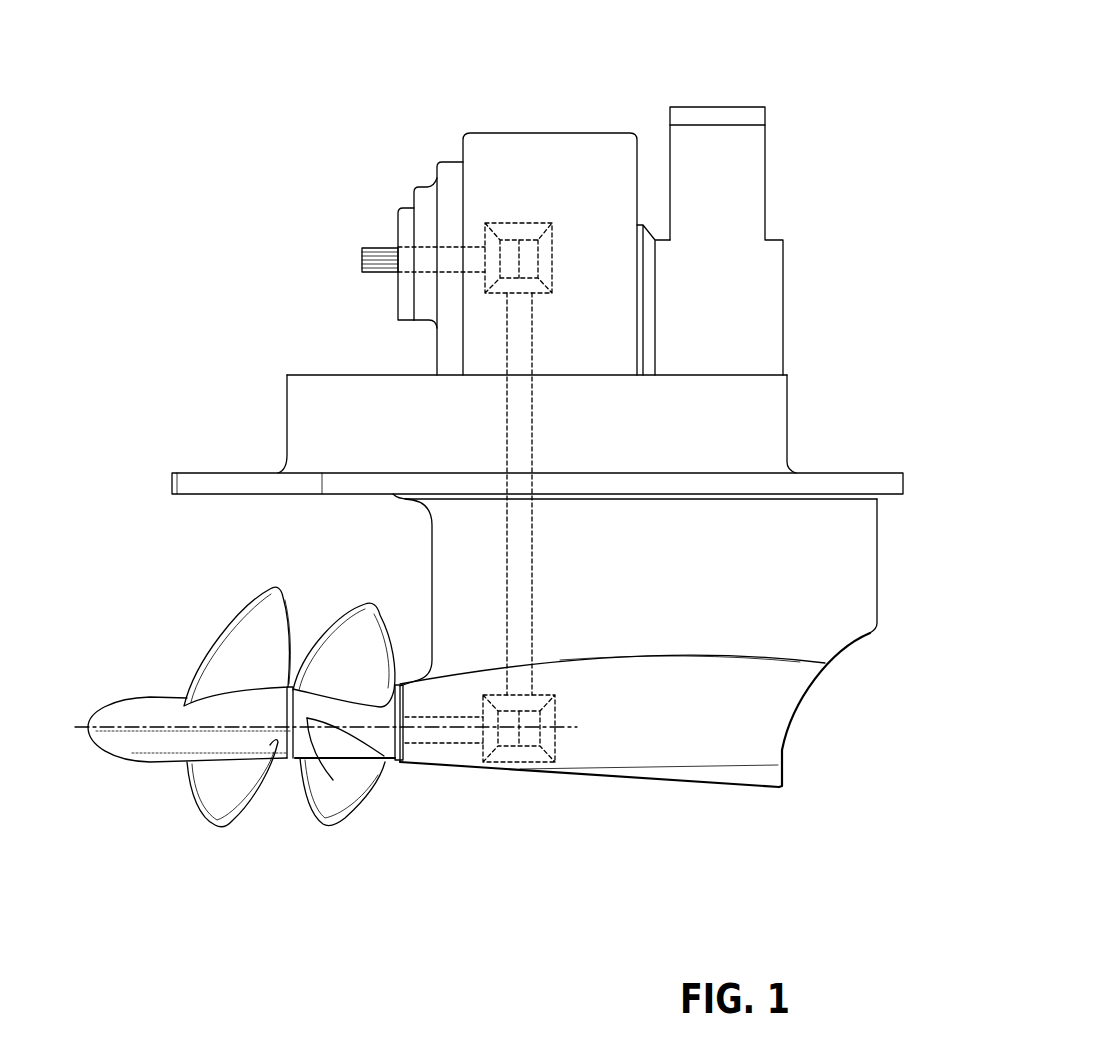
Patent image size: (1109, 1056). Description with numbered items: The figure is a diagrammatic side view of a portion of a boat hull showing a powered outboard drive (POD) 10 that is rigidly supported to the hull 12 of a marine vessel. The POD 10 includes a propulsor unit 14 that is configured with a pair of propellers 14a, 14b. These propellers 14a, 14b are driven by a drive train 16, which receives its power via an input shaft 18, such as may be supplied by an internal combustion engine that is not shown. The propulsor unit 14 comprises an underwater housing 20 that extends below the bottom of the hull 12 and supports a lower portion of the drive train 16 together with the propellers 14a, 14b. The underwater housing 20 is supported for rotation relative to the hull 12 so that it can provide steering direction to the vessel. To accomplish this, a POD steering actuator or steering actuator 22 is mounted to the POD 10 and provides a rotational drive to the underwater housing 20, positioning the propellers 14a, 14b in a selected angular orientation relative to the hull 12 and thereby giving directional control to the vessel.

The powered outboard drive 10 is at (361, 153).
The hull 12 is at (838, 470).
The propulsor unit 14 is at (419, 780).
The propeller 14a is at (213, 826).
The propeller 14b is at (322, 826).
The drive train 16 is at (492, 675).
The input shaft 18 is at (372, 249).
The underwater housing 20 is at (768, 637).
The steering actuator 22 is at (765, 108).